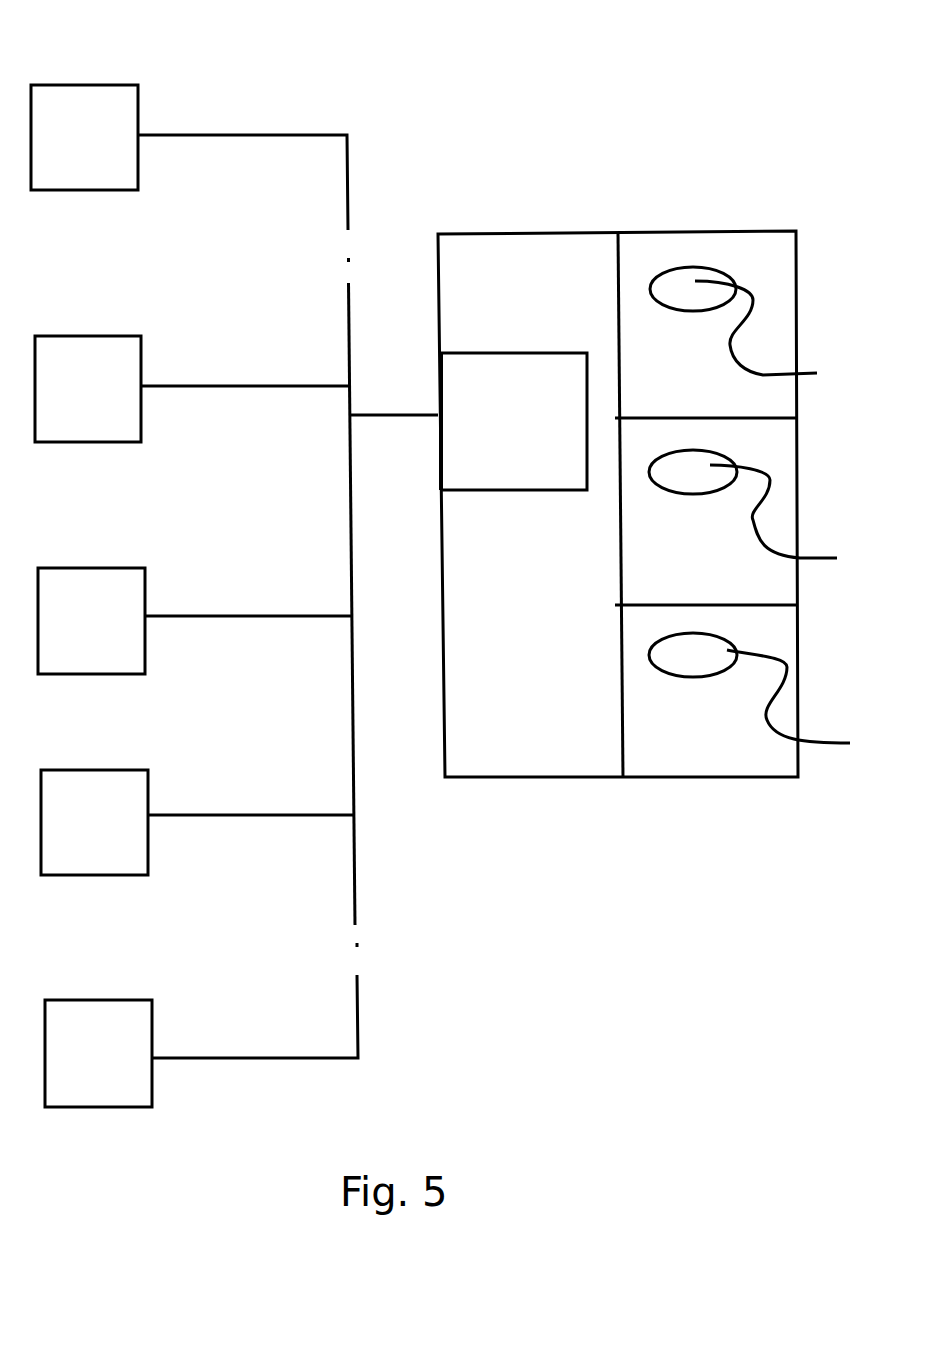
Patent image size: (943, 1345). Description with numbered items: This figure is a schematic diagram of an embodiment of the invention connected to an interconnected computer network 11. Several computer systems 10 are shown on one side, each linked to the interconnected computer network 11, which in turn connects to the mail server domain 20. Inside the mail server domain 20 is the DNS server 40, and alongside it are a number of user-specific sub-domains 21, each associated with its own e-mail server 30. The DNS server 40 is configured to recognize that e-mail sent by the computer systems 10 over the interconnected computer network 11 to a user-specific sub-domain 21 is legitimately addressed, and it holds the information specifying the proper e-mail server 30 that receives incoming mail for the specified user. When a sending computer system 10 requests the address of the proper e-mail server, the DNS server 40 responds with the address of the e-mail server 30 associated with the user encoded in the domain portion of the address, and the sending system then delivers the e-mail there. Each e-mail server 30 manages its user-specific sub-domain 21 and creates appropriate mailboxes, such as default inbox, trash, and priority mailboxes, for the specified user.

The computer systems 10 is at (119, 127).
The interconnected computer network 11 is at (355, 835).
The mail server domain 20 is at (485, 232).
The user-specific sub-domain 21 is at (775, 257).
The e-mail server 30 is at (769, 512).
The DNS server 40 is at (492, 415).